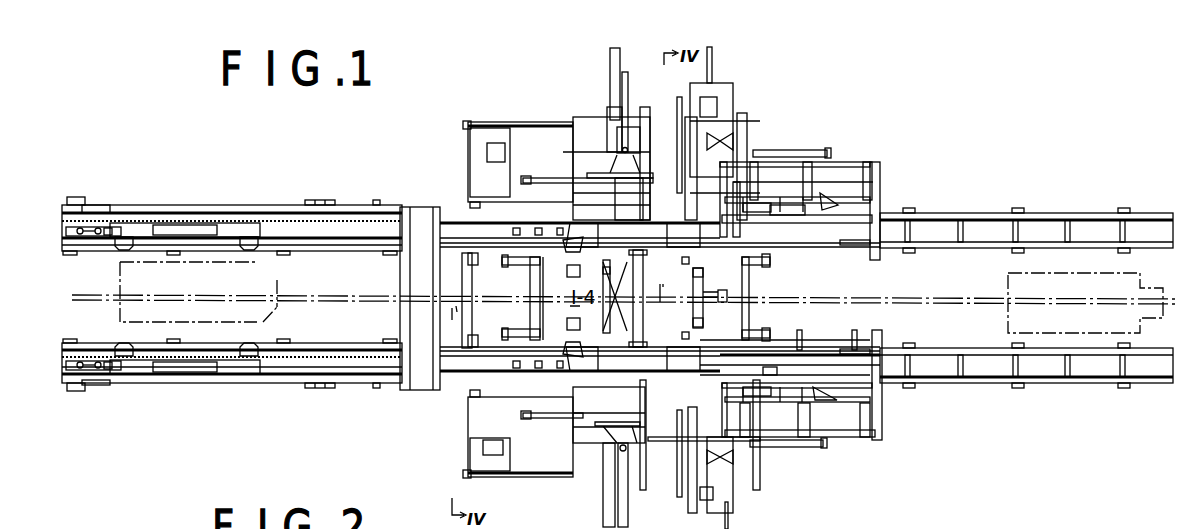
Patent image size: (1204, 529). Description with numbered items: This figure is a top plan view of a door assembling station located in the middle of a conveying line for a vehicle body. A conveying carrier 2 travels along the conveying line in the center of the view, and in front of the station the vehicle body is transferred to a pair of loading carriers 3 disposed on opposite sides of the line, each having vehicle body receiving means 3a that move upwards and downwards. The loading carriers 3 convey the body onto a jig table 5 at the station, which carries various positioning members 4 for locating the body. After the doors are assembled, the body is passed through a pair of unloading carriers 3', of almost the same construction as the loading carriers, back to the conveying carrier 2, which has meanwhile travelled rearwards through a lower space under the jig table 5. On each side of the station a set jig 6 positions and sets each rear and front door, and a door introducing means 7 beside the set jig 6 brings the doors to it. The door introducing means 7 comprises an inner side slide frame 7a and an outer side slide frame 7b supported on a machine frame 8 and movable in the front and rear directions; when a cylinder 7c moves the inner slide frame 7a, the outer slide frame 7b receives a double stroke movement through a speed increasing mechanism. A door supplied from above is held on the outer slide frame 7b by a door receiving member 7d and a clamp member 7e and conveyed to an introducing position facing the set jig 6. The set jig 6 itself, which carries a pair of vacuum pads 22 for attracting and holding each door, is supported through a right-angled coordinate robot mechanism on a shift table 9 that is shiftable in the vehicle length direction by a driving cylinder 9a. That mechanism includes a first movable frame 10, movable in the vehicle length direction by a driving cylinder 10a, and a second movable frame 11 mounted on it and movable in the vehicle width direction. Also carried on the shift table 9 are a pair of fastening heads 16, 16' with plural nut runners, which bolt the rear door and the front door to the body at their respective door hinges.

The conveying carrier 2 is at (226, 240).
The loading carrier 3 is at (163, 294).
The vehicle body receiving means 3a is at (606, 333).
The unloading carrier 3' is at (628, 301).
The positioning member 4 is at (440, 277).
The jig table 5 is at (525, 300).
The set jig 6 is at (640, 157).
The door introducing means 7 is at (838, 198).
The inner side slide frame 7a is at (743, 255).
The outer side slide frame 7b is at (808, 225).
The cylinder 7c is at (846, 246).
The door receiving member 7d is at (775, 403).
The clamp member 7e is at (815, 200).
The machine frame 8 is at (880, 195).
The shift table 9 is at (520, 462).
The driving cylinder 9a is at (770, 150).
The first movable frame 10 is at (612, 165).
The driving cylinder 10a is at (540, 178).
The second movable frame 11 is at (640, 160).
The fastening head 16 is at (702, 288).
The fastening head 16' is at (730, 304).
The vacuum pad 22 is at (725, 135).